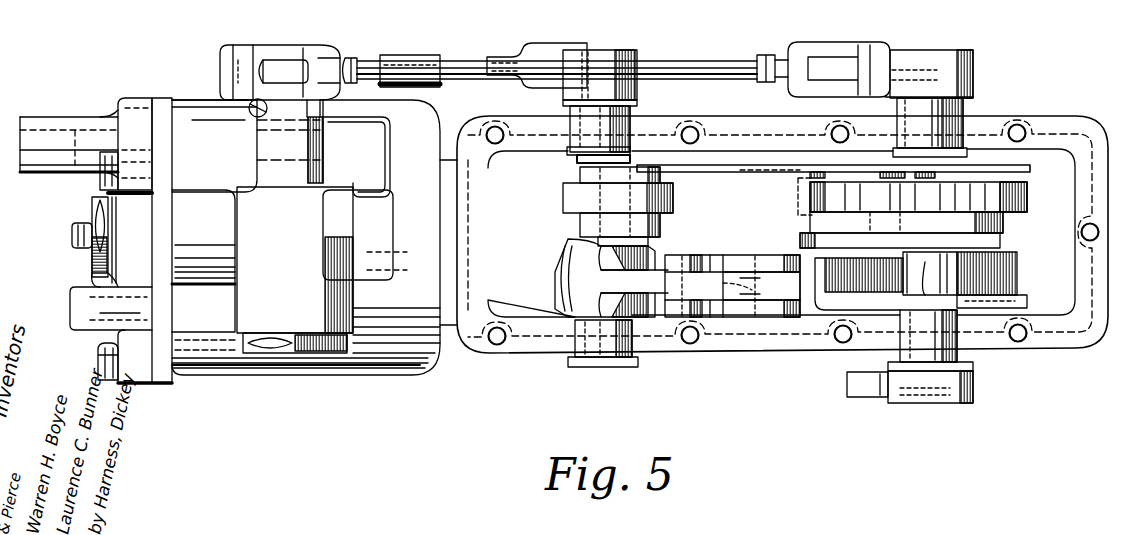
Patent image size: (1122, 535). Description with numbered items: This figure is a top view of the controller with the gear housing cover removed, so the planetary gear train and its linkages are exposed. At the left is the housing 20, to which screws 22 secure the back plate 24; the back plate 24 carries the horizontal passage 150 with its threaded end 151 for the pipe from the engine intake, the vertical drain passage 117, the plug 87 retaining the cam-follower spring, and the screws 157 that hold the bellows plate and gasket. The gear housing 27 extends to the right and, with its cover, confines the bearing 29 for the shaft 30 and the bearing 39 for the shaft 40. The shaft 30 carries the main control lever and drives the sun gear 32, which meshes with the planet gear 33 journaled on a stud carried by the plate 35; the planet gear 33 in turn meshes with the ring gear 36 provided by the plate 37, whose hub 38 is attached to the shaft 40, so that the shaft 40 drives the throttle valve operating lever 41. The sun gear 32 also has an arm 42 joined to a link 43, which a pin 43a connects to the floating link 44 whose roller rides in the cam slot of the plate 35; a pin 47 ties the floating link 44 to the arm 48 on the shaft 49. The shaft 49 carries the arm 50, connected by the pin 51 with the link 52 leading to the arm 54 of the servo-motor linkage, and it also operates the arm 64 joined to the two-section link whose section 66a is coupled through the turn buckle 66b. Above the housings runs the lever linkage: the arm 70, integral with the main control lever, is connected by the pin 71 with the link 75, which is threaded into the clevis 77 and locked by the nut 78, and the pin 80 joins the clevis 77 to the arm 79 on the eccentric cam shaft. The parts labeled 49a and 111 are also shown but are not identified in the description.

The housing 20 is at (437, 127).
The screws 22 is at (100, 175).
The back plate 24 is at (142, 100).
The housing 27 is at (1075, 113).
The bearing 29 is at (945, 133).
The shaft 30 is at (930, 120).
The sun gear 32 is at (1003, 231).
The planet gear 33 is at (980, 273).
The plate 35 is at (1027, 198).
The ring gear 36 is at (1005, 278).
The plate 37 is at (1020, 300).
The hub 38 is at (938, 316).
The bearing 39 is at (940, 345).
The shaft 40 is at (975, 375).
The throttle valve operating lever 41 is at (848, 385).
The arm 42 is at (800, 242).
The link 43 is at (820, 196).
The pin 43a is at (833, 163).
The floating link 44 is at (740, 170).
The pin 47 is at (600, 172).
The arm 48 is at (557, 205).
The shaft 49 is at (580, 155).
The bearing post 49a is at (612, 120).
The arm 50 is at (560, 298).
The pin 51 is at (696, 255).
The link 52 is at (748, 262).
The arm 54 is at (758, 287).
The arm 64 is at (613, 50).
The link section 66a is at (532, 43).
The turn buckle 66b is at (413, 54).
The arm 70 is at (922, 50).
The pin 71 is at (872, 41).
The link 75 is at (460, 60).
The clevis 77 is at (290, 47).
The nut 78 is at (350, 57).
The arm 79 is at (220, 70).
The pin 80 is at (238, 52).
The plug 87 is at (90, 213).
The plate 111 is at (292, 345).
The drain passage 117 is at (88, 305).
The horizontal passage 150 is at (30, 128).
The threaded end 151 is at (90, 135).
The screws 157 is at (72, 238).